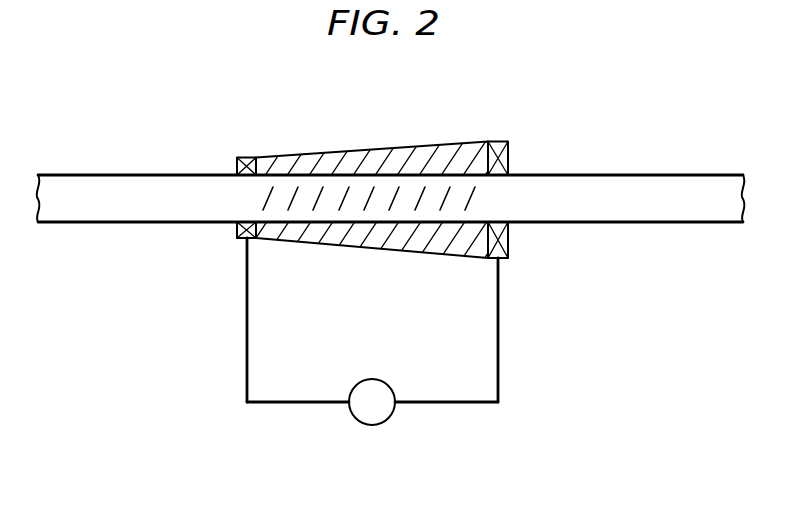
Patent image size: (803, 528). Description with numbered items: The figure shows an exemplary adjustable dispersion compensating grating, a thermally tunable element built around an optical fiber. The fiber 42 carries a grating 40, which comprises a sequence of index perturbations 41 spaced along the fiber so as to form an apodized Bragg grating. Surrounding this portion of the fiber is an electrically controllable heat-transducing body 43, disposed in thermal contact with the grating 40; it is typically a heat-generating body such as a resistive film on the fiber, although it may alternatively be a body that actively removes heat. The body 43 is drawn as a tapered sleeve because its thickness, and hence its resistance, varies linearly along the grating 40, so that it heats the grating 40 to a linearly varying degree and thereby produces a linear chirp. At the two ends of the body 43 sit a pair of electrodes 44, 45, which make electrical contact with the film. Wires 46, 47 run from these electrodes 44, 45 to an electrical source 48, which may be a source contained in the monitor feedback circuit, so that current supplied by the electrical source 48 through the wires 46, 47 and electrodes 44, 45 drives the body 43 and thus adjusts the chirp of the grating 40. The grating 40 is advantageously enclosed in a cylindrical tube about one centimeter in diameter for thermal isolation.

The grating 40 is at (488, 270).
The index perturbations 41 is at (477, 195).
The fiber 42 is at (118, 175).
The electrically controllable heat-transducing body 43 is at (331, 152).
The electrode 44 is at (233, 232).
The electrode 45 is at (501, 141).
The wire 46 is at (247, 337).
The wire 47 is at (500, 327).
The electrical source 48 is at (389, 418).